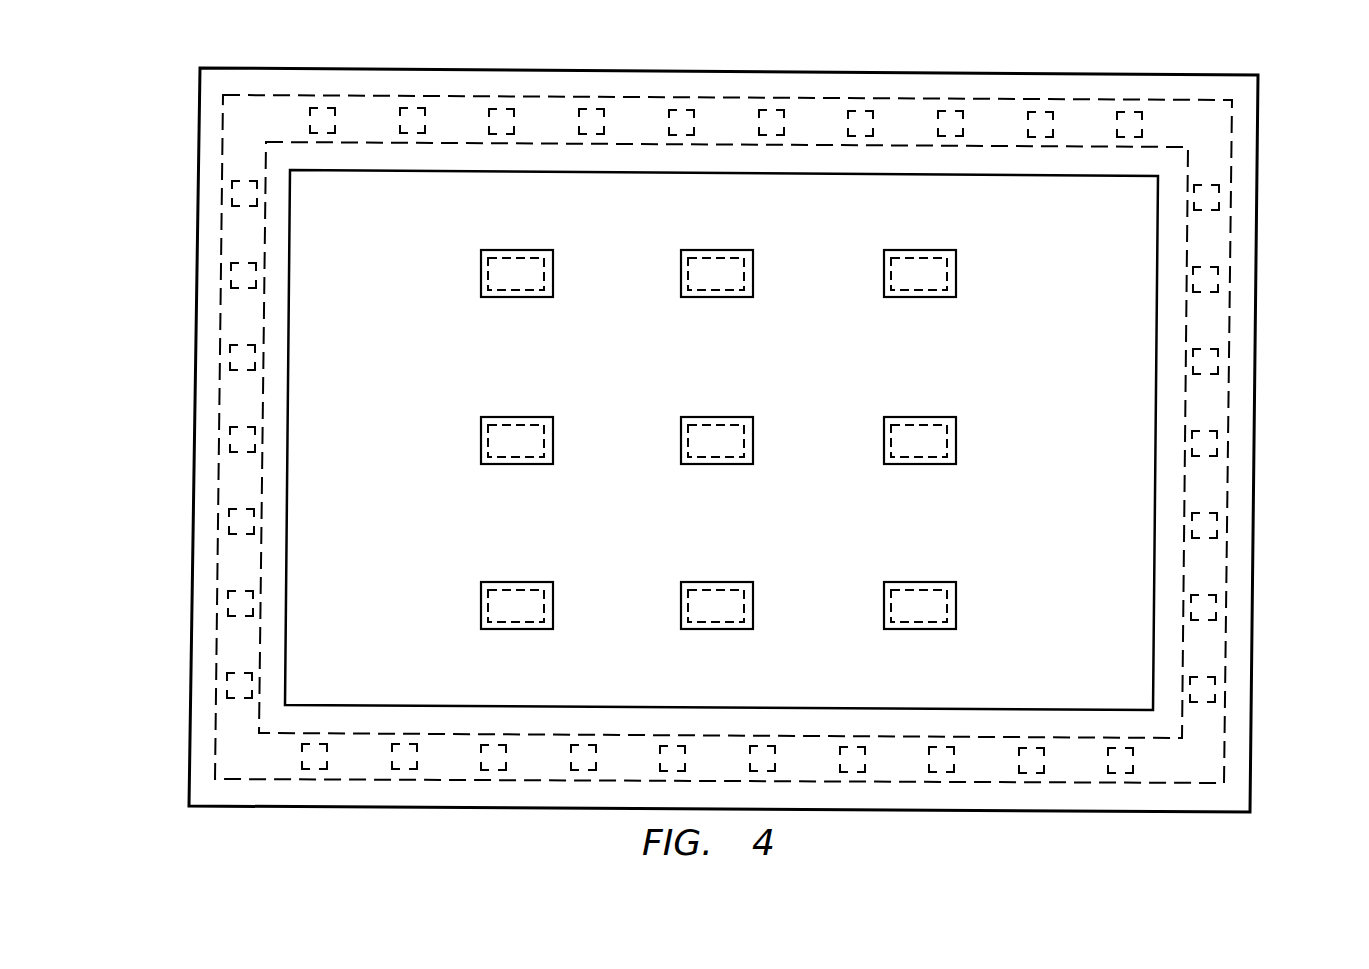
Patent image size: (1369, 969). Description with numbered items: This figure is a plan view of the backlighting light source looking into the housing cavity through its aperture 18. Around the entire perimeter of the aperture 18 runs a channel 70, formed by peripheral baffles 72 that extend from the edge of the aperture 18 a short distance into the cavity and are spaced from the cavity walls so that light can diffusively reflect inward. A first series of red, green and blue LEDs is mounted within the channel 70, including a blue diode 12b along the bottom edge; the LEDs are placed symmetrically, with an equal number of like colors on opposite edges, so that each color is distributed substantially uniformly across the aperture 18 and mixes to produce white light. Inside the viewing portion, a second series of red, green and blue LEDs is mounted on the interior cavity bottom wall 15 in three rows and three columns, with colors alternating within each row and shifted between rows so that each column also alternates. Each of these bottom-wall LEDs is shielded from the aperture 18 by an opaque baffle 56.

The blue light emitting diode 12b is at (494, 758).
The opaque baffle 56 is at (529, 298).
The interior cavity bottom wall 15 is at (390, 433).
The aperture 18 is at (1133, 210).
The channel 70 is at (818, 128).
The peripheral baffle 72 is at (721, 160).